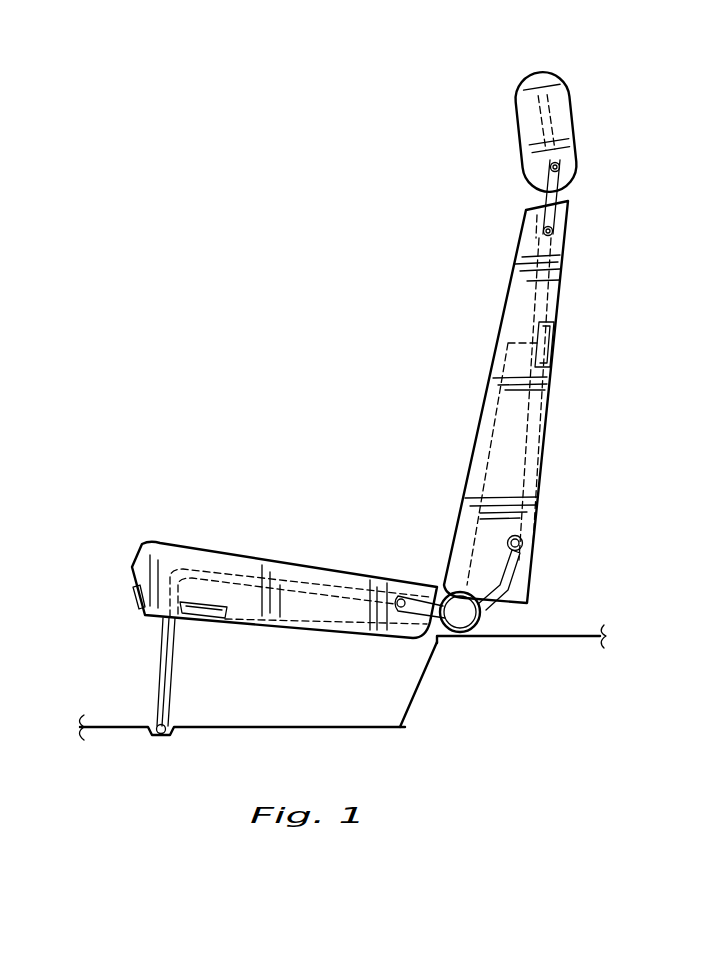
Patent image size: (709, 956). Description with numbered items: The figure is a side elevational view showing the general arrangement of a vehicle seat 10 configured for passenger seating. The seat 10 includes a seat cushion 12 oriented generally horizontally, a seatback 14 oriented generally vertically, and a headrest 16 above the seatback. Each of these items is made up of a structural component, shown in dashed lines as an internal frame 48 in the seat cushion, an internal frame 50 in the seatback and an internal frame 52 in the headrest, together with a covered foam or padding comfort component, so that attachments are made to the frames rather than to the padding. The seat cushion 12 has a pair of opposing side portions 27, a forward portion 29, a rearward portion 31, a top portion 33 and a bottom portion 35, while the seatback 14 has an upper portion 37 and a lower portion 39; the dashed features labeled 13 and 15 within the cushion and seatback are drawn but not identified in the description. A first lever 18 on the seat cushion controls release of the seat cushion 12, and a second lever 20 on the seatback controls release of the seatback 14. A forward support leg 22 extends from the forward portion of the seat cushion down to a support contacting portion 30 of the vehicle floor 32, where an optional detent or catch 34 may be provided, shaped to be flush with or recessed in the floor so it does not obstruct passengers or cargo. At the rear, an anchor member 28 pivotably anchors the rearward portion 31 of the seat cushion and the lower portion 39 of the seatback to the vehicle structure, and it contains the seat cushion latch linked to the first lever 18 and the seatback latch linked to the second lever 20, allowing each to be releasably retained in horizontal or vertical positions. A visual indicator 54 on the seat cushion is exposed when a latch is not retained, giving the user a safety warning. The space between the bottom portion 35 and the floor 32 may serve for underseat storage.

The vehicle seat 10 is at (230, 182).
The seat cushion 12 is at (237, 567).
The seat cushion frame 13 is at (328, 622).
The seatback 14 is at (494, 352).
The seat back frame 15 is at (488, 453).
The headrest 16 is at (556, 153).
The first lever 18 is at (207, 620).
The second lever 20 is at (553, 352).
The forward support leg 22 is at (160, 652).
The side portions 27 is at (277, 570).
The anchor member 28 is at (490, 623).
The forward portion 29 is at (129, 575).
The support contacting portion 30 is at (182, 712).
The rearward portion 31 is at (430, 638).
The floor 32 is at (343, 703).
The top portion 33 is at (300, 569).
The catch 34 is at (158, 734).
The bottom portion 35 is at (278, 630).
The upper portion 37 is at (488, 252).
The lower portion 39 is at (428, 500).
The internal frame 48 is at (194, 568).
The internal frame 50 is at (536, 446).
The internal frame 52 is at (513, 142).
The visual indicator 54 is at (134, 597).